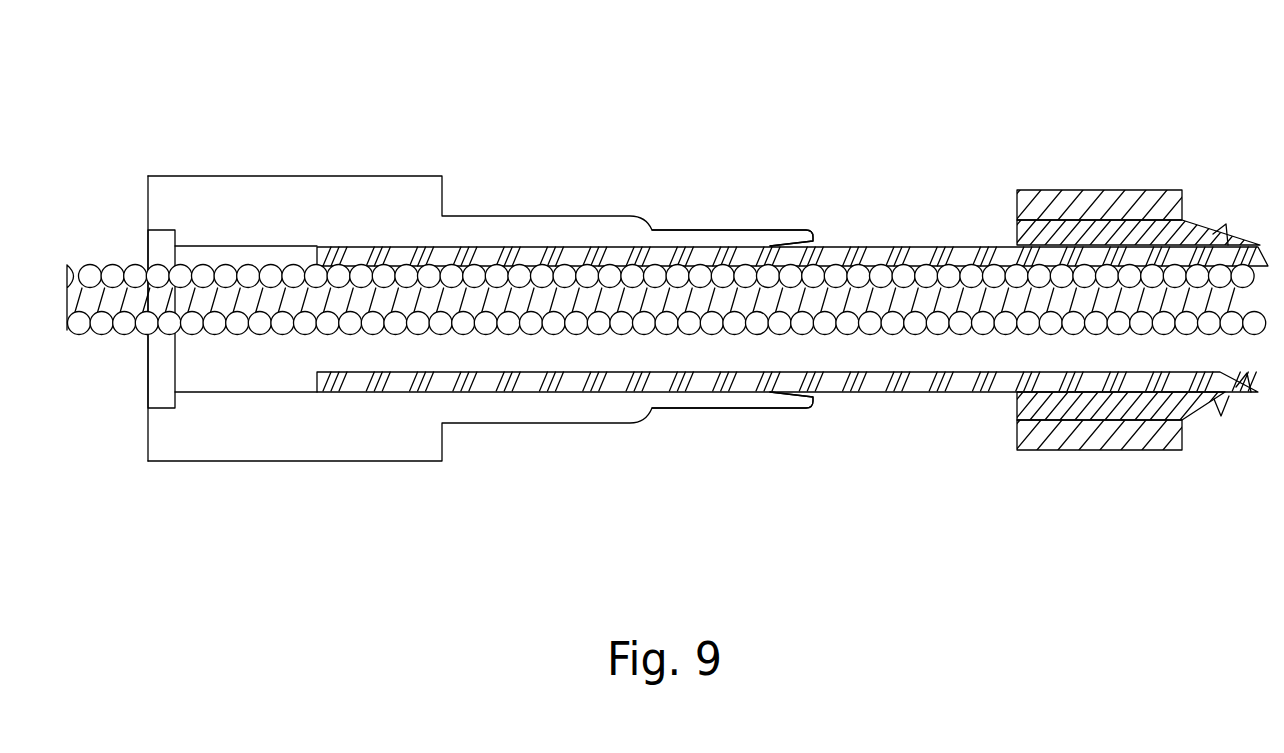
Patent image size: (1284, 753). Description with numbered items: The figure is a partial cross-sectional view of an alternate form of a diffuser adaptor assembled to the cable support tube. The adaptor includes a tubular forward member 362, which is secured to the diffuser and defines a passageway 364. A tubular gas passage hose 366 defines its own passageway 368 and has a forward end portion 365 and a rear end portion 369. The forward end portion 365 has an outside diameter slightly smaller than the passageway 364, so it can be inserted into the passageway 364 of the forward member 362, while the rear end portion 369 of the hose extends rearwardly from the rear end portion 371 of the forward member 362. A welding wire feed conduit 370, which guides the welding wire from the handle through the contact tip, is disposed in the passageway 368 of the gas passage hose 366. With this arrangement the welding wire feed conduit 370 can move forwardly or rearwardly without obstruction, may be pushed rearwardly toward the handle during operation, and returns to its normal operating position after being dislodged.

The forward member 362 is at (223, 202).
The passageway 364 is at (283, 257).
The forward end portion 365 is at (435, 388).
The gas passage hose 366 is at (890, 250).
The passageway 368 is at (652, 348).
The rear end portion 369 is at (1195, 378).
The welding wire feed conduit 370 is at (852, 333).
The rear end portion 371 is at (783, 232).